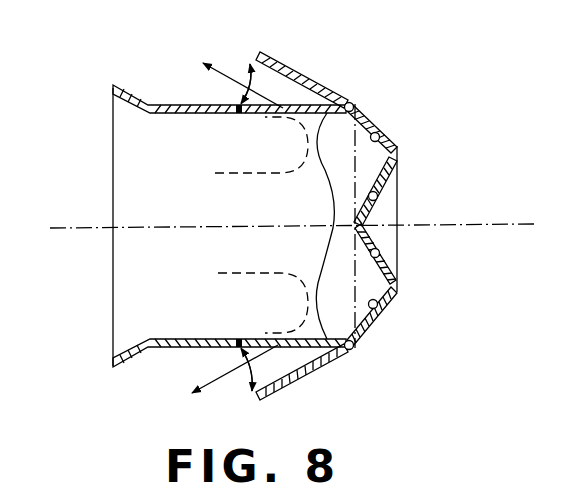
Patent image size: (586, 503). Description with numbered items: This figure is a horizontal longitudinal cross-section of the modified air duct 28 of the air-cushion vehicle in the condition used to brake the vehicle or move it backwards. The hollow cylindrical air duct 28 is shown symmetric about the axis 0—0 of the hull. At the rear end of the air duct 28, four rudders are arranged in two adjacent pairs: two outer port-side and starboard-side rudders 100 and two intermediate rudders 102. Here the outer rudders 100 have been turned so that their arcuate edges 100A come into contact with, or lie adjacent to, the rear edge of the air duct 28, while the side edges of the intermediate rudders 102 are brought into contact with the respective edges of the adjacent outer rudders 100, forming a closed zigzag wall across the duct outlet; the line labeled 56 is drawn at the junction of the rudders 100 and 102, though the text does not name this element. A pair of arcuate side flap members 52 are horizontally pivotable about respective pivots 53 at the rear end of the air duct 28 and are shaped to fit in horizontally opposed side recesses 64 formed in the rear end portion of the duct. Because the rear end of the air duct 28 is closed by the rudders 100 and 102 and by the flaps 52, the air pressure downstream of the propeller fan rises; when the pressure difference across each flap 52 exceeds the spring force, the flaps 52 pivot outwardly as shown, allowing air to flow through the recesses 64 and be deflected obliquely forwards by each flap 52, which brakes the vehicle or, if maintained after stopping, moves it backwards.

The axis of the hull 0 is at (291, 226).
The air duct 28 is at (168, 104).
The side flap members 52 is at (311, 85).
The pivots 53 is at (354, 106).
The vertical member 56 is at (390, 137).
The side recesses 64 is at (254, 114).
The outer rudders 100 is at (397, 156).
The arcuate edges 100A is at (366, 113).
The intermediate rudders 102 is at (386, 194).